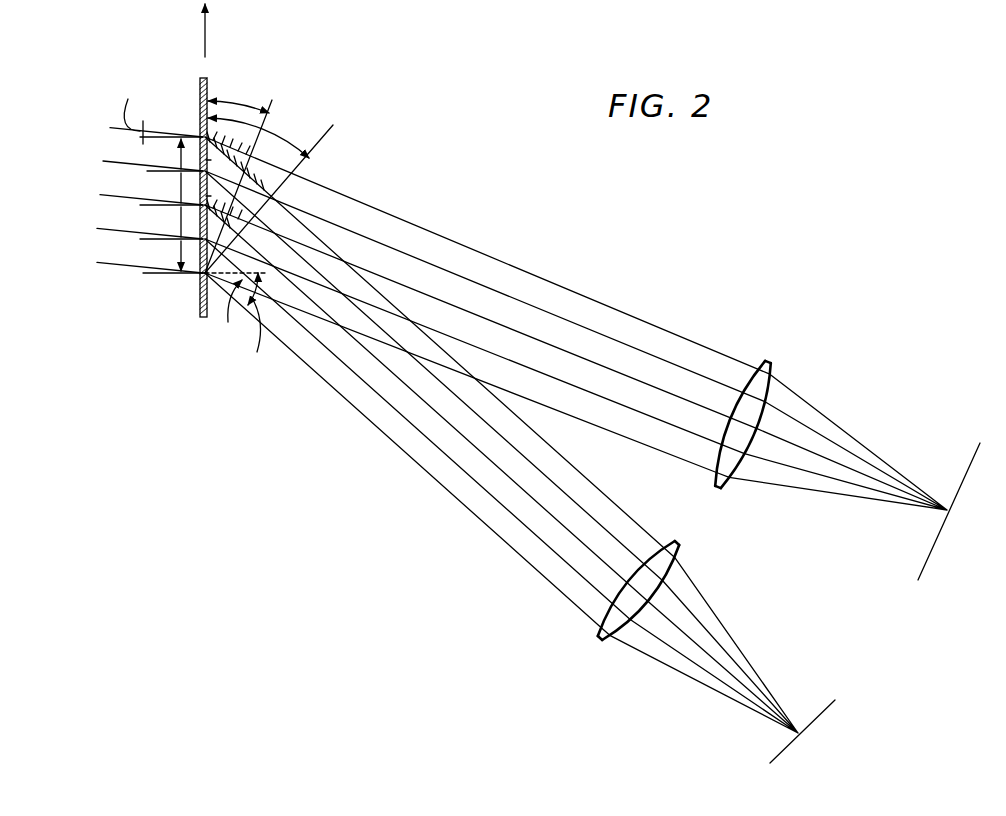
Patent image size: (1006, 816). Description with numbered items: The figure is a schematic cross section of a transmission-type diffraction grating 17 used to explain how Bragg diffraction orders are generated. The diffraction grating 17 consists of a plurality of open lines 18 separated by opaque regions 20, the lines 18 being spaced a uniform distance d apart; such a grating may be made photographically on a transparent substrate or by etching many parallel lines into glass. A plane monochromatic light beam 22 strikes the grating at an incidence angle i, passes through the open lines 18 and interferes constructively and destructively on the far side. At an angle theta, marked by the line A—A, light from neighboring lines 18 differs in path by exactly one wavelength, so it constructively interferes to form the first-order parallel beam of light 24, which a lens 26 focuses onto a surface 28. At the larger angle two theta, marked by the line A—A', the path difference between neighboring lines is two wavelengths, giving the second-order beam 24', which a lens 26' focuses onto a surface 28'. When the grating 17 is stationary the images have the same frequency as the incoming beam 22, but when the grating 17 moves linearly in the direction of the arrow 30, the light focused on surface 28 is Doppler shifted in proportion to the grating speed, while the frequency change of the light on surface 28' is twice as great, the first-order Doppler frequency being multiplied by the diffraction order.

The diffraction grating 17 is at (143, 323).
The open lines 18 is at (200, 123).
The opaque regions 20 is at (198, 280).
The plane monochromatic light beam 22 is at (108, 199).
The parallel beam of light 24 is at (576, 323).
The beam 24' is at (501, 435).
The lens 26 is at (773, 422).
The lens 26' is at (669, 590).
The surface 28 is at (949, 508).
The surface 28' is at (802, 723).
The arrow 30 is at (207, 37).